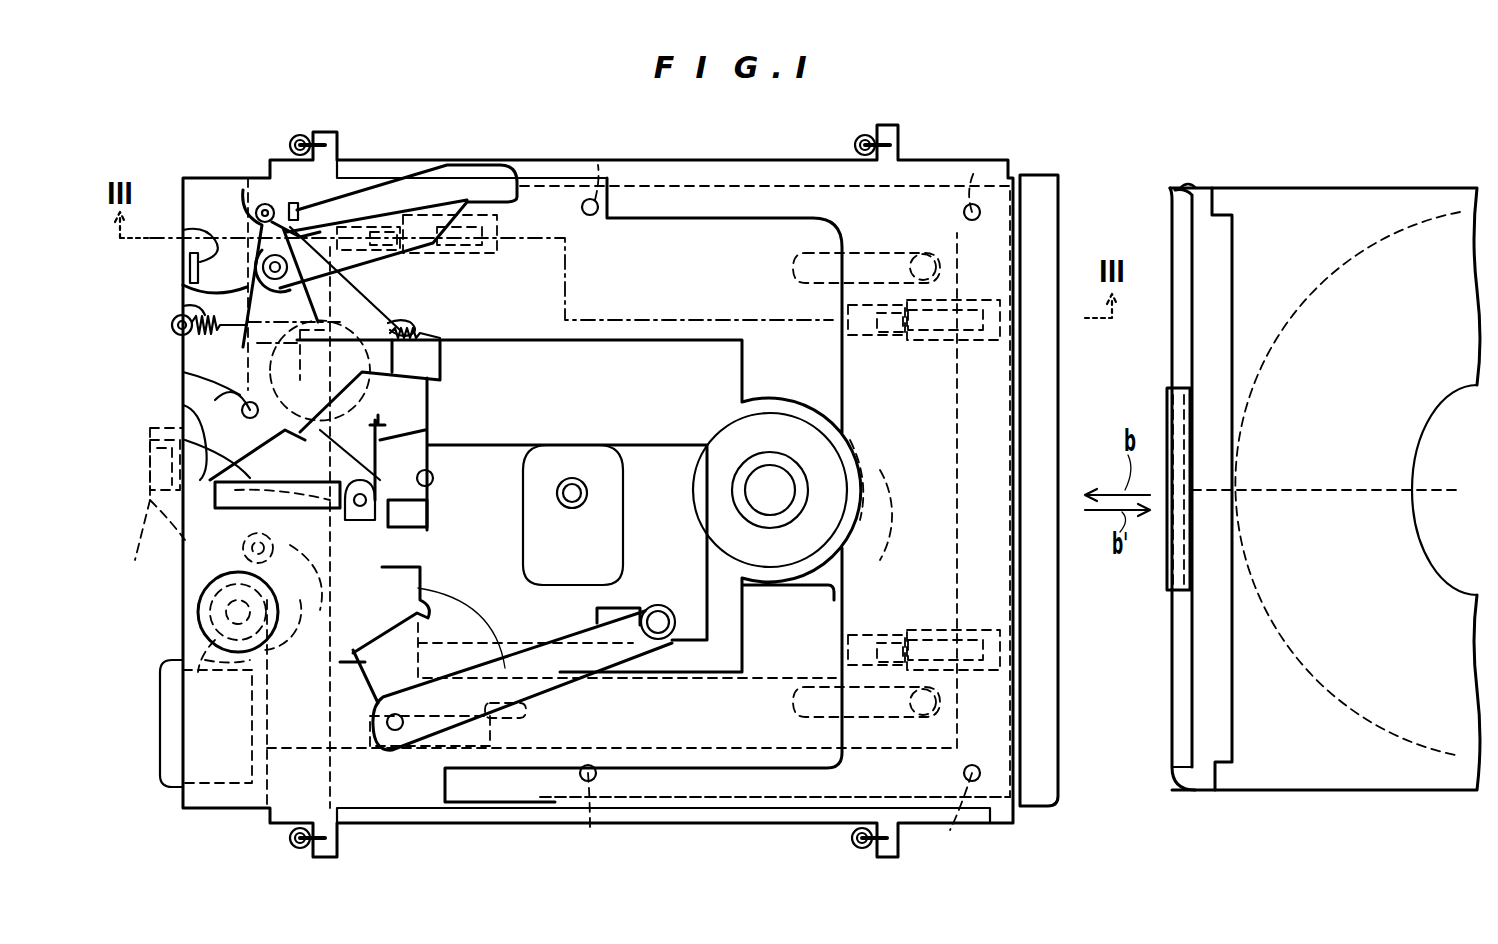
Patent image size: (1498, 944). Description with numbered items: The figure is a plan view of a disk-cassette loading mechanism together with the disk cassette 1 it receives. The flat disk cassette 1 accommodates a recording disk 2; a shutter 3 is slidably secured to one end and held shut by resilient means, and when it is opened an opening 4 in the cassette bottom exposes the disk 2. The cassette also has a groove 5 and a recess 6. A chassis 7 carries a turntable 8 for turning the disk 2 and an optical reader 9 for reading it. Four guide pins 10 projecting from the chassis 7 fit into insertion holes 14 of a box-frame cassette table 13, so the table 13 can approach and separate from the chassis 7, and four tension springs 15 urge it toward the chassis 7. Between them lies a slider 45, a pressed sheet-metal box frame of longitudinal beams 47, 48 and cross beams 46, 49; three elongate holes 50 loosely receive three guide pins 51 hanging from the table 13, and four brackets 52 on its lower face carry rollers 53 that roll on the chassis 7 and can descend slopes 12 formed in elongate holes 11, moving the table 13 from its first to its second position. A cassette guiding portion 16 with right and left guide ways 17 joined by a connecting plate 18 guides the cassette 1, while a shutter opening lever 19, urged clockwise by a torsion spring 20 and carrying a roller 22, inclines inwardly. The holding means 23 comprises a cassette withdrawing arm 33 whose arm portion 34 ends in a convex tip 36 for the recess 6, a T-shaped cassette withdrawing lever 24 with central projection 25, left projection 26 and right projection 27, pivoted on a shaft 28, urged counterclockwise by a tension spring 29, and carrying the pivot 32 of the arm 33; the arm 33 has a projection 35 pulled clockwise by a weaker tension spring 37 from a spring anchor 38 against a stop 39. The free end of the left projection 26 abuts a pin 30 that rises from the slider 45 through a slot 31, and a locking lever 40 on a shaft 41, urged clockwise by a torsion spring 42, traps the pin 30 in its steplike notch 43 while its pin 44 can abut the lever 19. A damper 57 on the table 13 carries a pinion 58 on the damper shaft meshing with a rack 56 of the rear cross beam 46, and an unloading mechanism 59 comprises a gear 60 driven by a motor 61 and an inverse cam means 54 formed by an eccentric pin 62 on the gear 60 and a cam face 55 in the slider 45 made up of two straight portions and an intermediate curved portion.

The disk cassette 1 is at (1358, 185).
The recording disk 2 is at (1412, 228).
The shutter 3 is at (1170, 390).
The opening 4 is at (1325, 398).
The groove 5 is at (1172, 722).
The recess 6 is at (1195, 185).
The chassis 7 is at (960, 185).
The turntable 8 is at (705, 483).
The optical reader 9 is at (588, 488).
The guide pins 10 is at (1020, 152).
The elongate holes 11 is at (982, 310).
The slopes 12 is at (965, 340).
The cassette table 13 is at (556, 180).
The insertion holes 14 is at (590, 198).
The tension springs 15 is at (300, 133).
The cassette guiding portion 16 is at (1045, 752).
The guide ways 17 is at (750, 200).
The connecting plate 18 is at (1025, 412).
The shutter opening lever 19 is at (543, 657).
The torsion spring 20 is at (425, 632).
The roller 22 is at (658, 606).
The holding means 23 is at (235, 235).
The cassette withdrawing lever 24 is at (182, 335).
The central projection 25 is at (440, 372).
The left projection 26 is at (150, 428).
The right projection 27 is at (183, 286).
The shaft 28 is at (183, 372).
The tension spring 29 is at (183, 306).
The pin 30 is at (225, 505).
The slot 31 is at (300, 465).
The pivot 32 is at (240, 252).
The cassette withdrawing arm 33 is at (470, 188).
The arm portion 34 is at (455, 175).
The projection 35 is at (262, 210).
The convex tip 36 is at (512, 168).
The tension spring 37 is at (350, 205).
The spring anchor 38 is at (415, 318).
The stop 39 is at (292, 202).
The locking lever 40 is at (420, 528).
The shaft 41 is at (358, 520).
The torsion spring 42 is at (405, 432).
The steplike notch 43 is at (242, 548).
The pin 44 is at (435, 478).
The slider 45 is at (700, 235).
The rear cross beam 46 is at (305, 570).
The longitudinal beam 47 is at (645, 770).
The longitudinal beam 48 is at (648, 235).
The cross beam 49 is at (910, 462).
The elongate holes 50 is at (905, 258).
The guide pins 51 is at (925, 255).
The brackets 52 is at (850, 335).
The rollers 53 is at (887, 333).
The inverse cam means 54 is at (160, 540).
The cam face 55 is at (185, 500).
The rack 56 is at (198, 615).
The damper 57 is at (185, 650).
The pinion 58 is at (250, 660).
The unloading mechanism 59 is at (157, 690).
The gear 60 is at (242, 410).
The motor 61 is at (165, 742).
The eccentric pin 62 is at (277, 399).